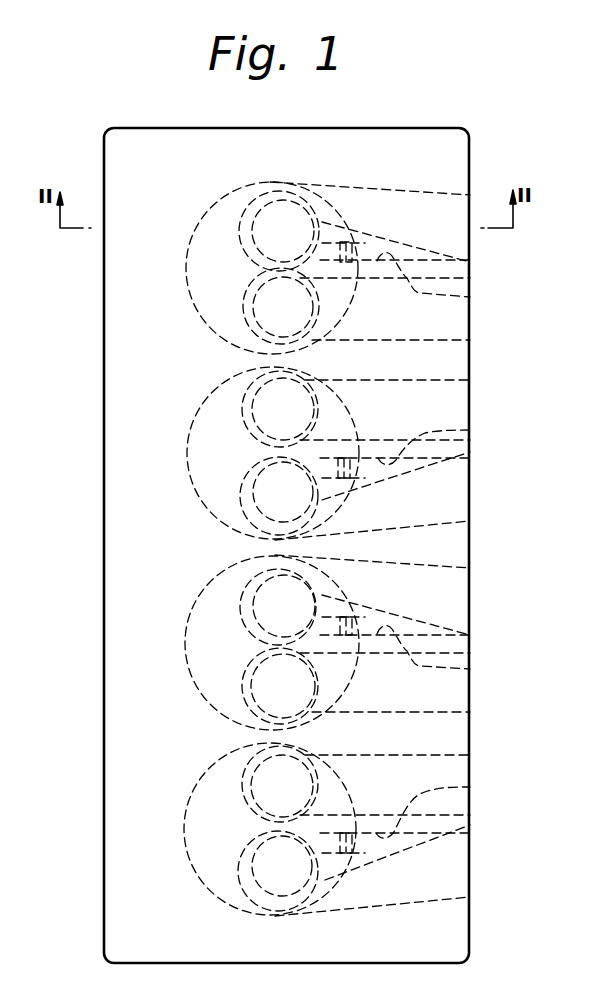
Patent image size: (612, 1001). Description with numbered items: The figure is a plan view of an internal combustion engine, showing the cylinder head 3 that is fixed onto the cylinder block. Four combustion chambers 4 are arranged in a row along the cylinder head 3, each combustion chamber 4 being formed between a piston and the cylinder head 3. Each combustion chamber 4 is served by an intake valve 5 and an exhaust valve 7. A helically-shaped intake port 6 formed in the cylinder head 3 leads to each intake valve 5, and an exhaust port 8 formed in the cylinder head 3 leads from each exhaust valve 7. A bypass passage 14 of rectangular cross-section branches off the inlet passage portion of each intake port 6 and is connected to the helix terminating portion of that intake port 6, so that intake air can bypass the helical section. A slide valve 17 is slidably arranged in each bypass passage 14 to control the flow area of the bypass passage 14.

The cylinder head 3 is at (150, 129).
The combustion chamber 4 is at (189, 300).
The intake valve 5 is at (258, 222).
The helically-shaped intake port 6 is at (410, 193).
The exhaust valve 7 is at (258, 320).
The exhaust port 8 is at (378, 340).
The bypass passage 14 is at (470, 297).
The slide valve 17 is at (352, 243).